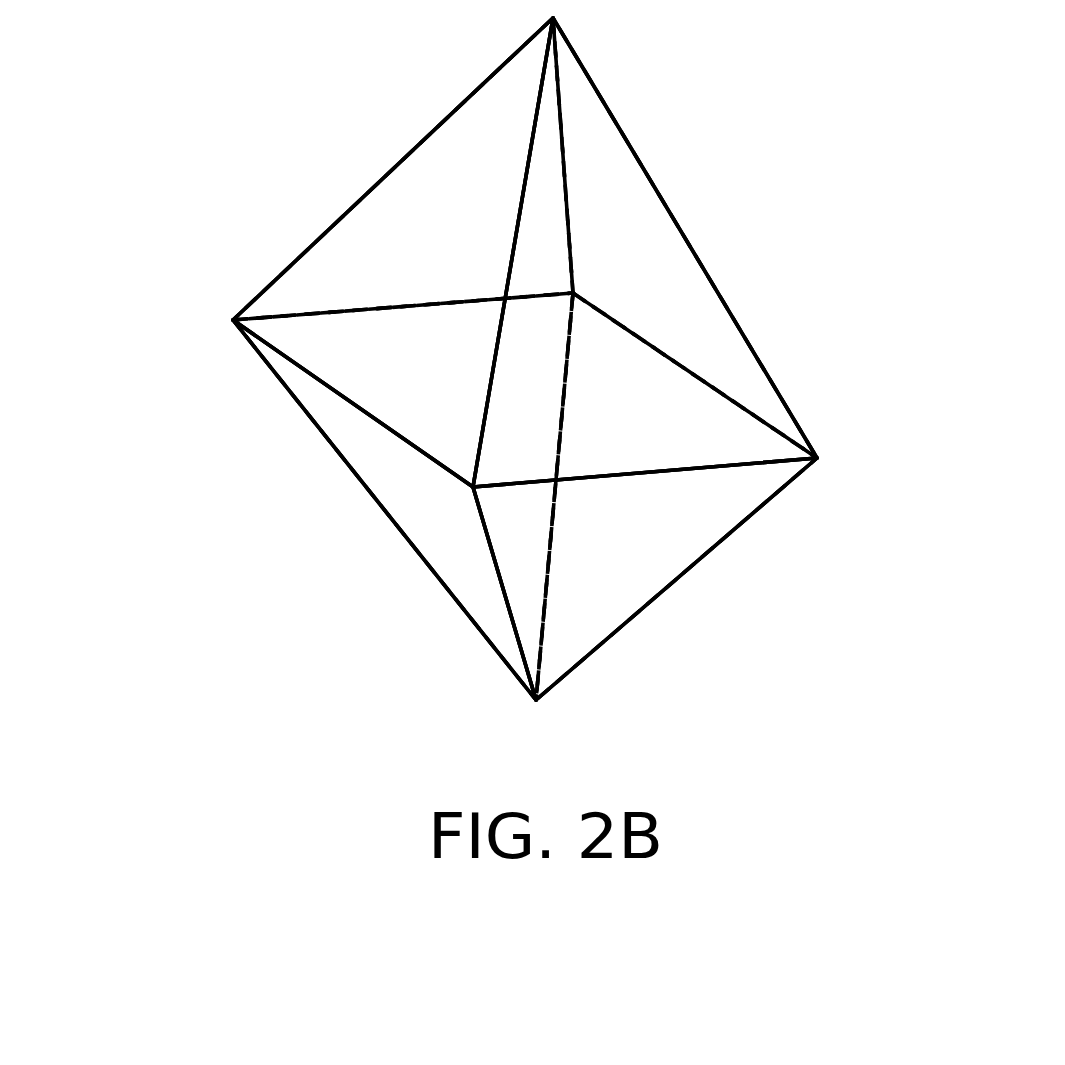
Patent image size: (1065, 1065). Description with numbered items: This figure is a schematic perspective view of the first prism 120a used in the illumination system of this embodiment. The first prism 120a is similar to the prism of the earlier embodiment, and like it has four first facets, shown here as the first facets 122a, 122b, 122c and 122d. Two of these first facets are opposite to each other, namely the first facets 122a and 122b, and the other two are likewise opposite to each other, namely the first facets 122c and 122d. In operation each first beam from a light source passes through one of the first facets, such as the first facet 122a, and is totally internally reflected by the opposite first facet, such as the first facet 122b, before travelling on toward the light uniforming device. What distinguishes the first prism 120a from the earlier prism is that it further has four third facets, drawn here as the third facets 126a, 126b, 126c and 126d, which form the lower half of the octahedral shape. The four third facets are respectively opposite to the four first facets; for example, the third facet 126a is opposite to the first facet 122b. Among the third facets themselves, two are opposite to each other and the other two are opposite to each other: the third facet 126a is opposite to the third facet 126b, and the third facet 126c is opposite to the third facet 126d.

The first prism 120a is at (1015, 749).
The first facet 122a is at (602, 190).
The first facet 122b is at (423, 263).
The first facet 122c is at (462, 190).
The first facet 122d is at (633, 293).
The third facet 126a is at (615, 580).
The third facet 126b is at (380, 457).
The third facet 126c is at (448, 543).
The third facet 126d is at (647, 520).